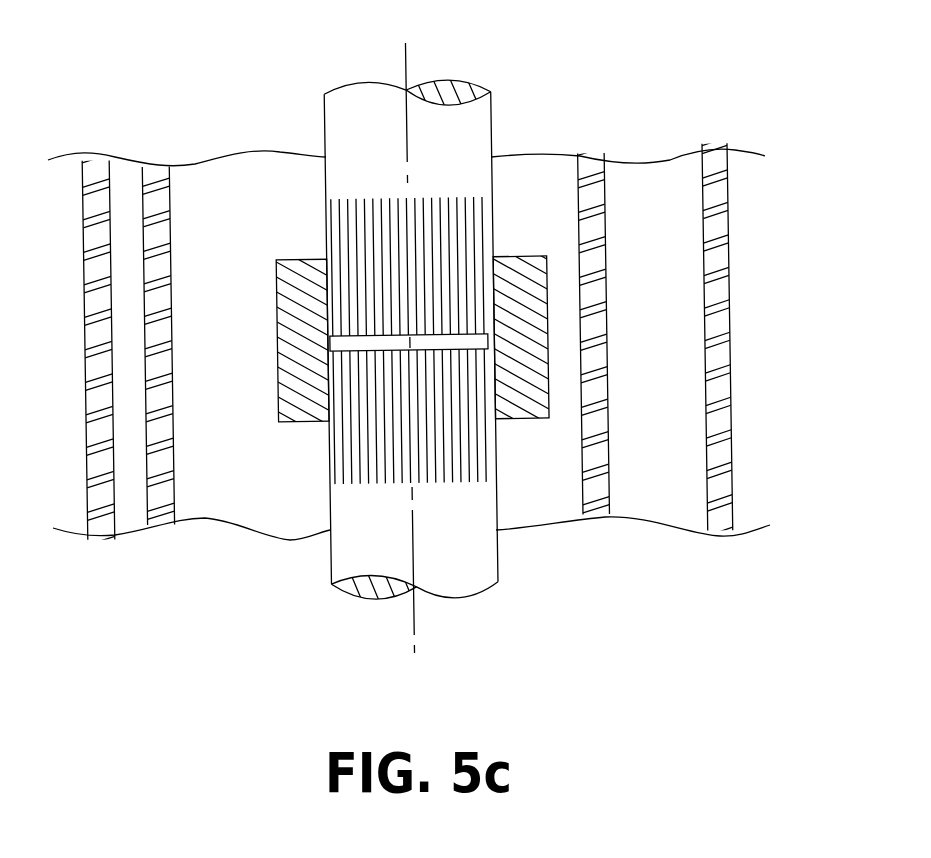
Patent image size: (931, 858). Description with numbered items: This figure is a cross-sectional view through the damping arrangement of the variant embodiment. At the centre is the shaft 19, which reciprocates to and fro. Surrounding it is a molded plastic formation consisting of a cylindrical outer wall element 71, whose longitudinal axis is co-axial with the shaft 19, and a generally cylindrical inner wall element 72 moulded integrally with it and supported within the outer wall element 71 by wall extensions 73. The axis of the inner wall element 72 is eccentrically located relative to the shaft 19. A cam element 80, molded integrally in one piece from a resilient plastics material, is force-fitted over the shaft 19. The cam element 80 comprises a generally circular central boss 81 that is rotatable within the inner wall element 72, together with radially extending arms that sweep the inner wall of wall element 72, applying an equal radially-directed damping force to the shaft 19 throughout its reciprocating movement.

The shaft 19 is at (340, 122).
The cylindrical outer wall element 71 is at (720, 327).
The inner cylindrical wall element 72 is at (591, 338).
The wall extensions 73 is at (578, 205).
The cam element 80 is at (366, 367).
The central boss 81 is at (497, 422).